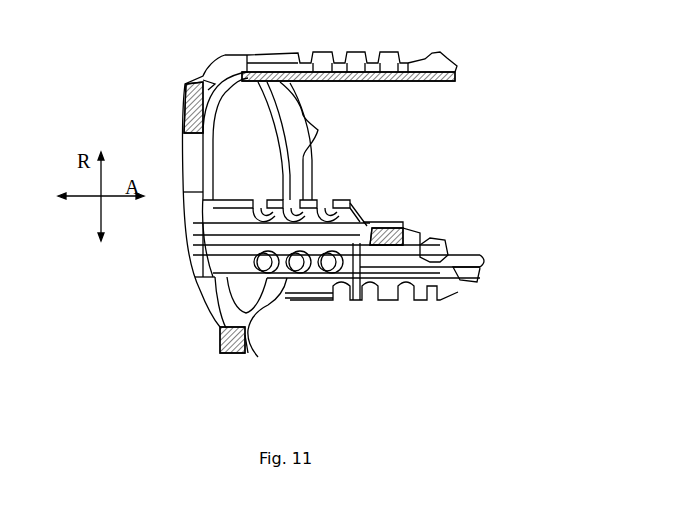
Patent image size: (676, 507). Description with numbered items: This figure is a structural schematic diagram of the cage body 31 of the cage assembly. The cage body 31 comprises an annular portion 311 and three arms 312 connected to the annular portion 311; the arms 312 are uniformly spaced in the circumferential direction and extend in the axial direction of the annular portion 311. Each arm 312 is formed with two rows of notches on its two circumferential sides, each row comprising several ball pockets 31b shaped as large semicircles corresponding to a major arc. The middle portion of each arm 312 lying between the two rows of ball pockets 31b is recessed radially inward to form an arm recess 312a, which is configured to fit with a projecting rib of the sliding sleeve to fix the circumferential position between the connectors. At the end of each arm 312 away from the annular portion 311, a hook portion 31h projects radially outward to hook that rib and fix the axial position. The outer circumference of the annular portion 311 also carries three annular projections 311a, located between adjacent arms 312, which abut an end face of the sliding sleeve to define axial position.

The cage body 31 is at (197, 68).
The annular portion 311 is at (195, 131).
The annular projection 311a is at (254, 358).
The arm 312 is at (391, 79).
The arm recess 312a is at (188, 270).
The ball pocket 31b is at (375, 300).
The hook portion 31h is at (477, 281).